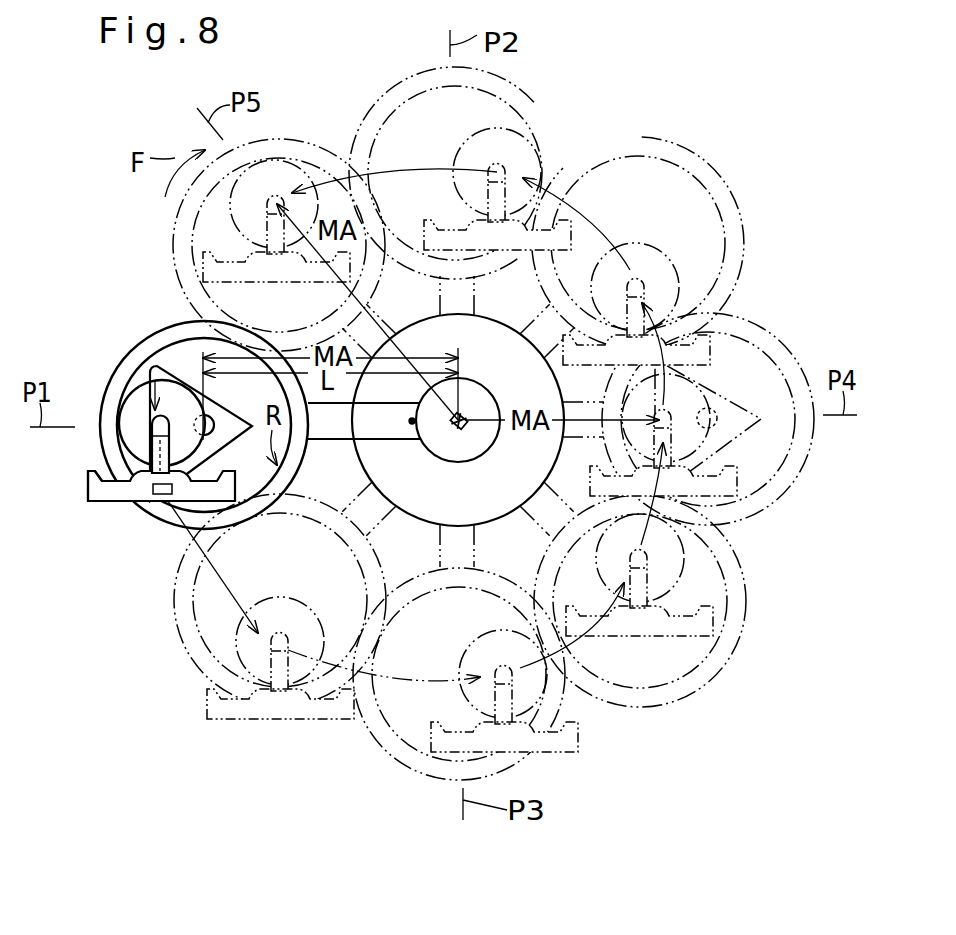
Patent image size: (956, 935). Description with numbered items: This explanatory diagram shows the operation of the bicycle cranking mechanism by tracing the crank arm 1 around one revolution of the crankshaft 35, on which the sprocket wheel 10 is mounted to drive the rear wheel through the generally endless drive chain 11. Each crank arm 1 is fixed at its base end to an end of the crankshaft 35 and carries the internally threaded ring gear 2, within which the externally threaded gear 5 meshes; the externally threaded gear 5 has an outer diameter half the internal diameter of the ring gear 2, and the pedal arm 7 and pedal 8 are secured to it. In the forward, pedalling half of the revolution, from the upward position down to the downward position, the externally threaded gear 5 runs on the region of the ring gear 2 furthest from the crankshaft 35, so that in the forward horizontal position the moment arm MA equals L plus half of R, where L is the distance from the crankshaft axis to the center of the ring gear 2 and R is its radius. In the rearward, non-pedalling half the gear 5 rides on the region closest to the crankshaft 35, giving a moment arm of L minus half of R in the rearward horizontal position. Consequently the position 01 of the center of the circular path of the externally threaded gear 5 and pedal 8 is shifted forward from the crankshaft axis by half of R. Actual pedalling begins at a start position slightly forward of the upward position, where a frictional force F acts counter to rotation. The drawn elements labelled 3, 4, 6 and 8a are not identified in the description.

The crank arm 1 is at (335, 441).
The internally threaded ring gear 2 is at (123, 370).
The lever 3 is at (213, 414).
The rotary disc 4 is at (160, 357).
The externally threaded gear 5 is at (140, 455).
The roller 6 is at (128, 405).
The pedal arm 7 is at (125, 437).
The pedal 8 is at (128, 495).
The base plate end lug 8a is at (92, 498).
The sprocket wheel 10 is at (428, 340).
The drive chain 11 is at (530, 326).
The crankshaft 35 is at (467, 430).
The position of the center of the circle of the path of movement of the externally t 01 is at (413, 425).